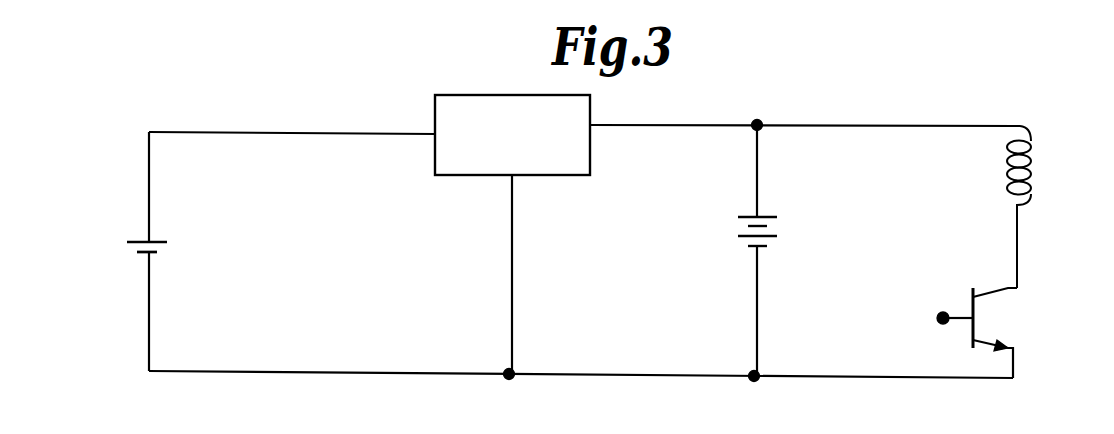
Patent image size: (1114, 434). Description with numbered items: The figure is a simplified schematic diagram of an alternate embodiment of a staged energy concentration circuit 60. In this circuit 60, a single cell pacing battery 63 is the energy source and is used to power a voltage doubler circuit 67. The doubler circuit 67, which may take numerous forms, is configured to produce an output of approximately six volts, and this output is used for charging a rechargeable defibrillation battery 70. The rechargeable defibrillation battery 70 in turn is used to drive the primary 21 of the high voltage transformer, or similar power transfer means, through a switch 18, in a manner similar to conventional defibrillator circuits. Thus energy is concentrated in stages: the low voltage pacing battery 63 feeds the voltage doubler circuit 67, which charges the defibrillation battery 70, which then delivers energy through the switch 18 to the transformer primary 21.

The circuit 60 is at (148, 190).
The single cell pacing battery 63 is at (143, 254).
The voltage doubler circuit 67 is at (449, 93).
The rechargeable defibrillation battery 70 is at (740, 216).
The primary of the high voltage transformer 21 is at (1033, 166).
The switch 18 is at (979, 338).